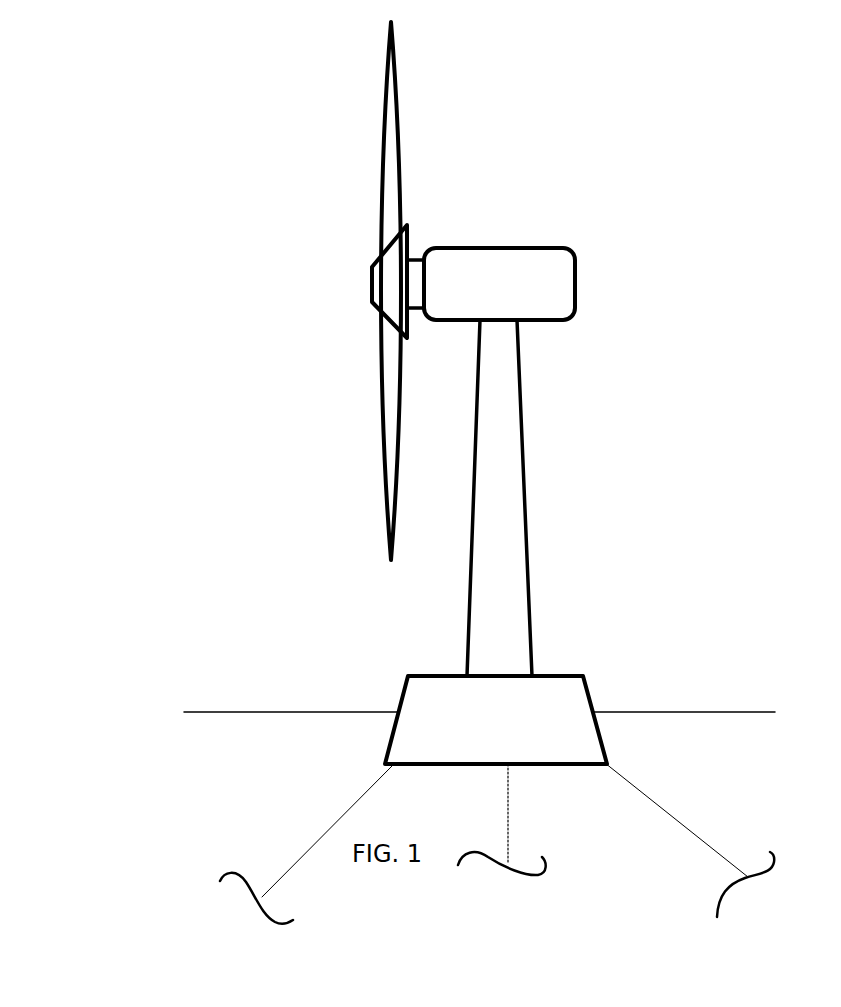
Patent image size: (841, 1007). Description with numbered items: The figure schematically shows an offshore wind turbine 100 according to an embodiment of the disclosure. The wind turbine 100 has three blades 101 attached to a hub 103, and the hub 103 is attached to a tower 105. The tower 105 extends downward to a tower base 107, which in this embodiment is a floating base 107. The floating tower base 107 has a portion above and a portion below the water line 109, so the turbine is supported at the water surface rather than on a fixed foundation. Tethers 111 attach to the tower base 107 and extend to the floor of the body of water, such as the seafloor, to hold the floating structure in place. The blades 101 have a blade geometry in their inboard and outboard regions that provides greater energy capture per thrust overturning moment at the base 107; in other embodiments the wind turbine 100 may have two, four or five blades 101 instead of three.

The wind turbine 100 is at (297, 257).
The blades 101 is at (389, 128).
The hub 103 is at (545, 285).
The tower 105 is at (493, 470).
The tower base 107 is at (438, 688).
The water line 109 is at (683, 712).
The tethers 111 is at (292, 858).